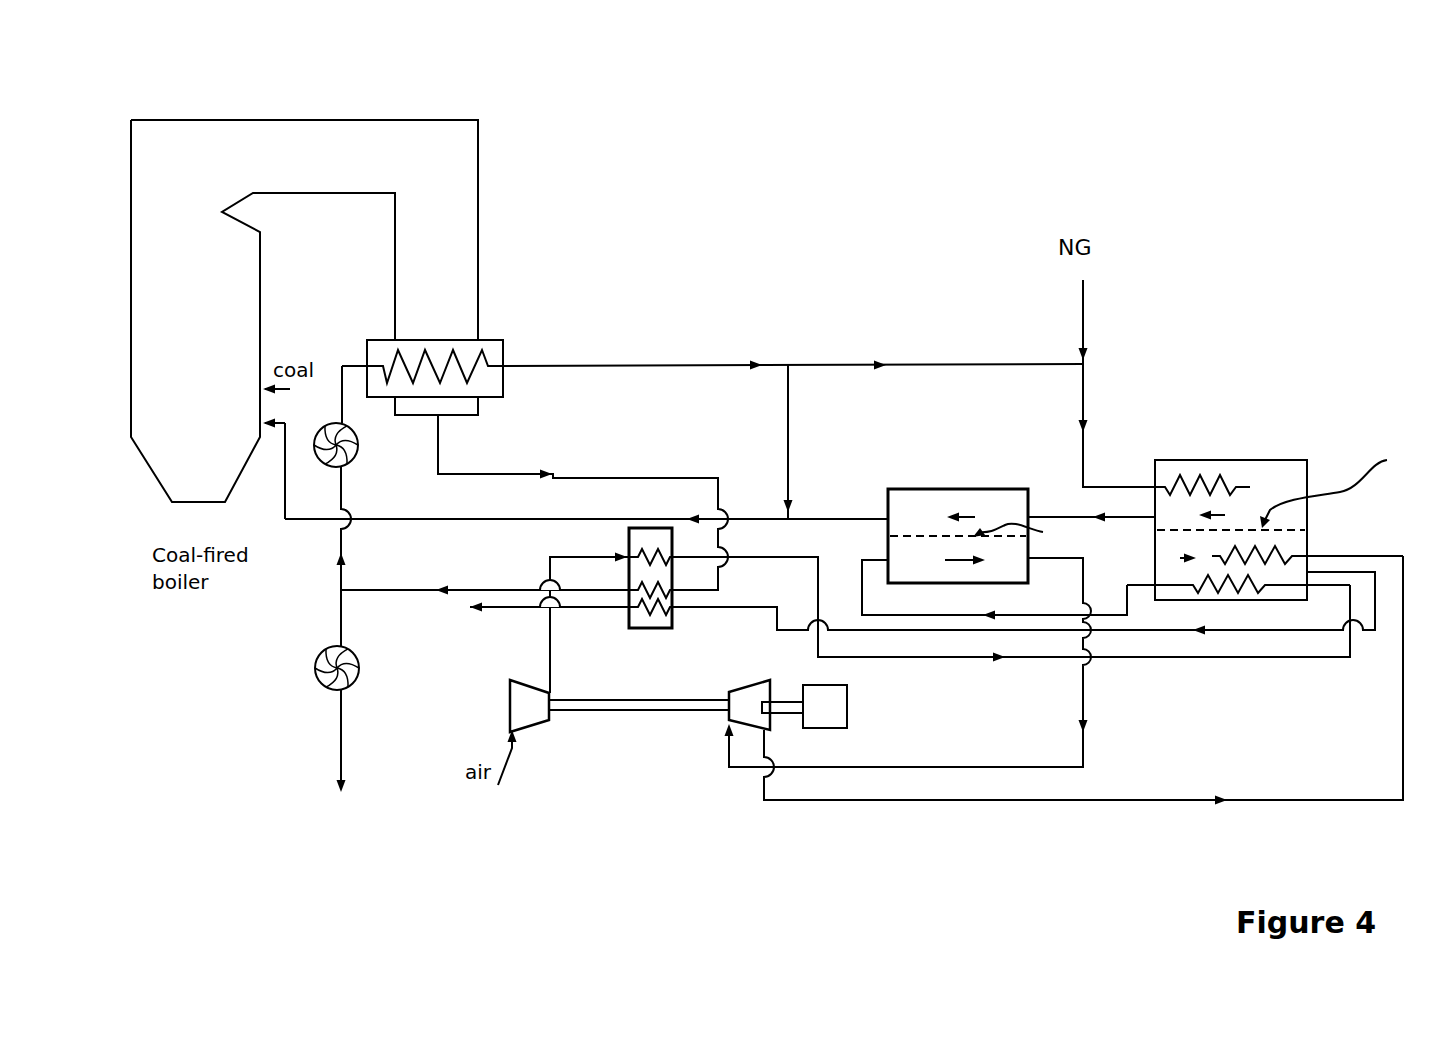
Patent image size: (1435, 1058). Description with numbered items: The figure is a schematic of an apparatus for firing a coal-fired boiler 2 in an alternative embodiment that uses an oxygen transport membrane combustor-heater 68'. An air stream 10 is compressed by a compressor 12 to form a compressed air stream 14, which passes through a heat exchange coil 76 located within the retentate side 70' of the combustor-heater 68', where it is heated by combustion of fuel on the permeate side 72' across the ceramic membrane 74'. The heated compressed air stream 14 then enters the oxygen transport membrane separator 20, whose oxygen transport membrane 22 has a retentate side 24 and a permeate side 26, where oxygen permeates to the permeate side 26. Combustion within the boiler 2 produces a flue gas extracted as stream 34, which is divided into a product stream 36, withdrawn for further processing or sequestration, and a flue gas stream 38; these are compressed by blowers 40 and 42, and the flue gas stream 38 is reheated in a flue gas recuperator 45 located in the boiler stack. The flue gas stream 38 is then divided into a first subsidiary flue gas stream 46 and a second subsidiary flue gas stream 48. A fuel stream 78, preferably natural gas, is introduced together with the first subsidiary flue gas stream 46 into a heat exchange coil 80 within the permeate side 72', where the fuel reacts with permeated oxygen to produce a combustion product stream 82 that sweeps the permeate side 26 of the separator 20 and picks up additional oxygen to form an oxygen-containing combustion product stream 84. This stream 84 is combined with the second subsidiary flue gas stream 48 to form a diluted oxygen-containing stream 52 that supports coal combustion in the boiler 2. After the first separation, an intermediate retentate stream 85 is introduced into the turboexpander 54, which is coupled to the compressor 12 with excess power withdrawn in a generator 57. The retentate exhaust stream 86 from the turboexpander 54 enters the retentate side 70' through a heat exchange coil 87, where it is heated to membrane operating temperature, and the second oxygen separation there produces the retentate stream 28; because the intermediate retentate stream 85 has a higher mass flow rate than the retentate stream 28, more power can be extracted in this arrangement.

The boiler 2 is at (200, 143).
The air stream 10 is at (495, 772).
The compressor 12 is at (540, 702).
The compressed air stream 14 is at (650, 630).
The oxygen transport membrane separator 20 is at (966, 480).
The oxygen transport membrane 22 is at (1021, 542).
The retentate side 24 is at (917, 560).
The permeate side 26 is at (945, 503).
The retentate stream 28 is at (1280, 632).
The flue gas stream 34 is at (607, 475).
The product stream 36 is at (341, 758).
The flue gas stream 38 is at (355, 363).
The blower 40 is at (315, 675).
The blower 42 is at (355, 452).
The flue gas recuperator 45 is at (495, 340).
The first subsidiary flue gas stream 46 is at (943, 362).
The second subsidiary flue gas stream 48 is at (788, 407).
The diluted oxygen-containing stream 52 is at (520, 522).
The turboexpander 54 is at (748, 712).
The generator 57 is at (835, 713).
The oxygen transport membrane combustor-heater 68' is at (1239, 497).
The retentate side 70' is at (1026, 588).
The permeate side 72' is at (1320, 481).
The ceramic membrane 74' is at (1341, 488).
The heat exchange coil 76 is at (1253, 590).
The fuel stream 78 is at (1083, 335).
The heat exchange coil 80 is at (1235, 485).
The combustion product stream 82 is at (1053, 515).
The oxygen-containing combustion product stream 84 is at (833, 517).
The intermediate retentate stream 85 is at (1085, 740).
The retentate exhaust stream 86 is at (1045, 800).
The heat exchange coil 87 is at (1267, 543).